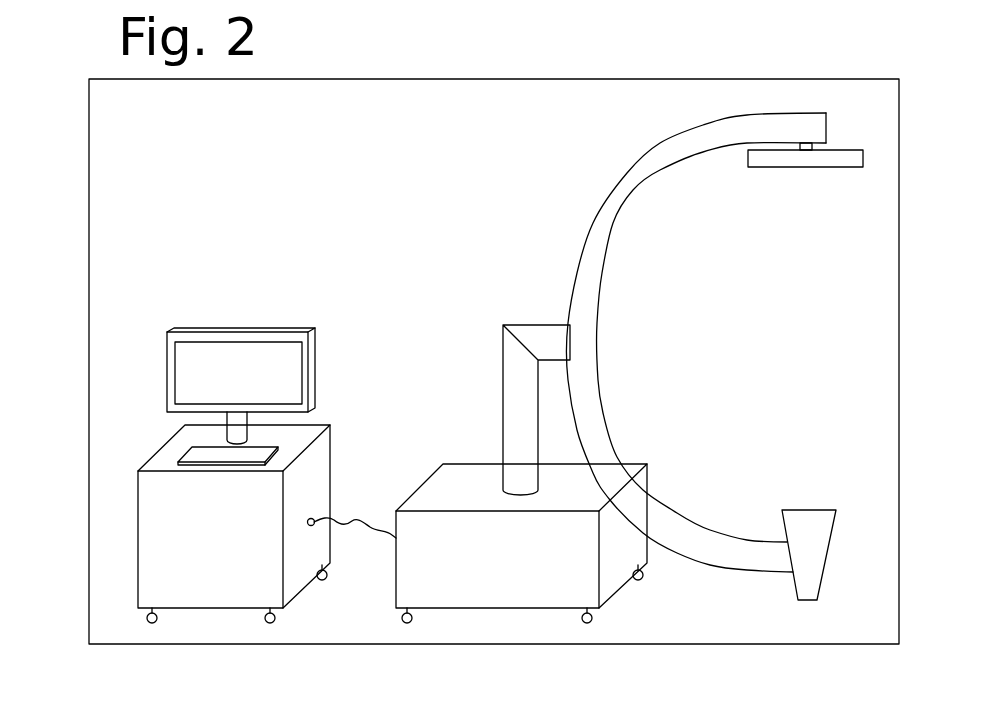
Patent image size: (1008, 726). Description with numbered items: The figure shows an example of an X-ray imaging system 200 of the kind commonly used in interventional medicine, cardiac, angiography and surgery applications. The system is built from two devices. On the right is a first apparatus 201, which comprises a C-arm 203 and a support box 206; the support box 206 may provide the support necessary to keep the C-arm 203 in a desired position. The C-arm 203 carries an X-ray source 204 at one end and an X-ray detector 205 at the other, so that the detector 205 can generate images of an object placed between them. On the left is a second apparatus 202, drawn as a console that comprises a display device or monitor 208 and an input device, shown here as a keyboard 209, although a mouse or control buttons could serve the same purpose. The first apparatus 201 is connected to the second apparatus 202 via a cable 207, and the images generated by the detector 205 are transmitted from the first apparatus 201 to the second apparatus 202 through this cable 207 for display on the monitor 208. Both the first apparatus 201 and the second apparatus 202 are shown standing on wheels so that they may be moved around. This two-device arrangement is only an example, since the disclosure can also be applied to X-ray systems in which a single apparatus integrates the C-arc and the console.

The X-ray imaging system 200 is at (458, 143).
The first apparatus 201 is at (644, 331).
The second apparatus 202 is at (163, 545).
The C-arm 203 is at (645, 173).
The X-ray source 204 is at (812, 522).
The X-ray detector 205 is at (852, 157).
The support box 206 is at (470, 478).
The cable 207 is at (360, 527).
The display device (monitor) 208 is at (280, 340).
The keyboard 209 is at (193, 455).